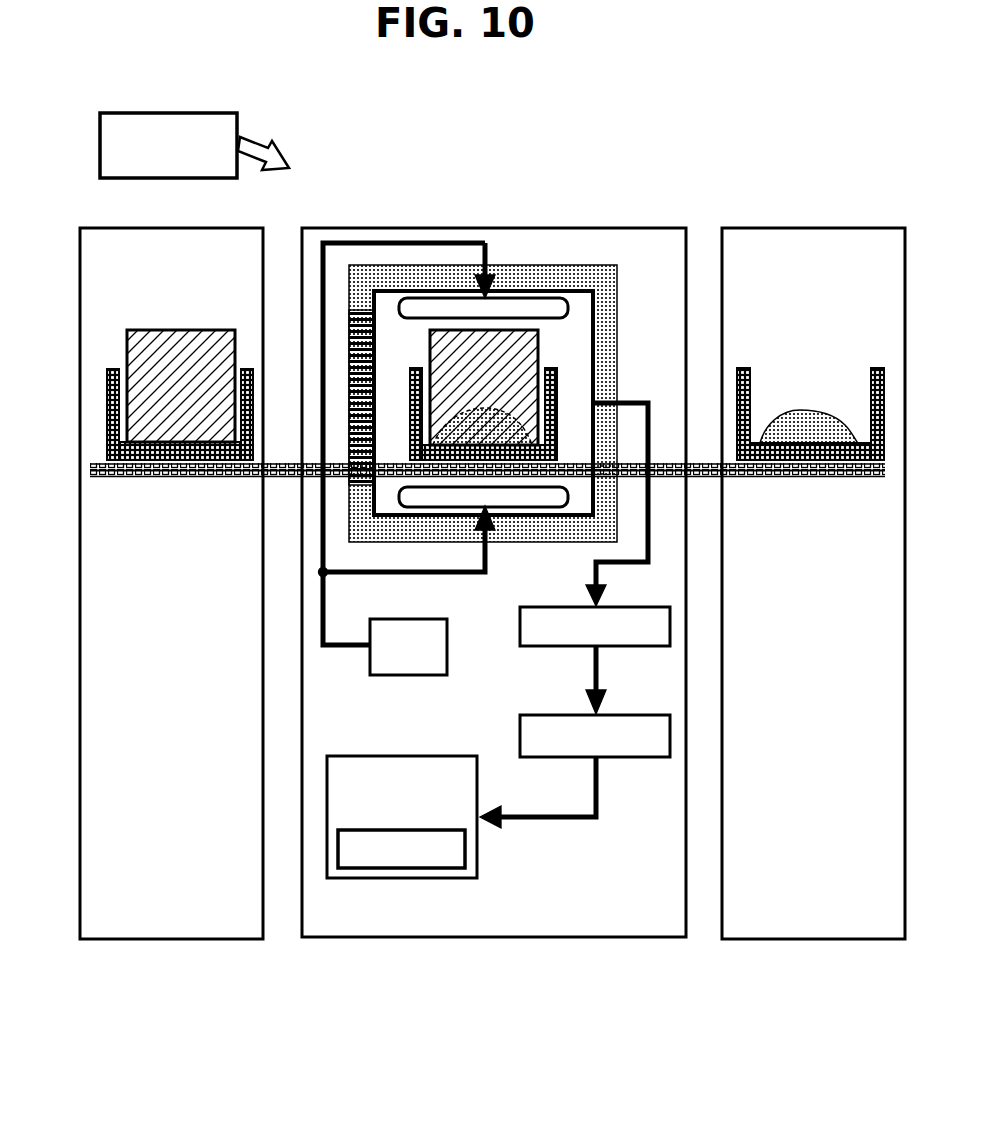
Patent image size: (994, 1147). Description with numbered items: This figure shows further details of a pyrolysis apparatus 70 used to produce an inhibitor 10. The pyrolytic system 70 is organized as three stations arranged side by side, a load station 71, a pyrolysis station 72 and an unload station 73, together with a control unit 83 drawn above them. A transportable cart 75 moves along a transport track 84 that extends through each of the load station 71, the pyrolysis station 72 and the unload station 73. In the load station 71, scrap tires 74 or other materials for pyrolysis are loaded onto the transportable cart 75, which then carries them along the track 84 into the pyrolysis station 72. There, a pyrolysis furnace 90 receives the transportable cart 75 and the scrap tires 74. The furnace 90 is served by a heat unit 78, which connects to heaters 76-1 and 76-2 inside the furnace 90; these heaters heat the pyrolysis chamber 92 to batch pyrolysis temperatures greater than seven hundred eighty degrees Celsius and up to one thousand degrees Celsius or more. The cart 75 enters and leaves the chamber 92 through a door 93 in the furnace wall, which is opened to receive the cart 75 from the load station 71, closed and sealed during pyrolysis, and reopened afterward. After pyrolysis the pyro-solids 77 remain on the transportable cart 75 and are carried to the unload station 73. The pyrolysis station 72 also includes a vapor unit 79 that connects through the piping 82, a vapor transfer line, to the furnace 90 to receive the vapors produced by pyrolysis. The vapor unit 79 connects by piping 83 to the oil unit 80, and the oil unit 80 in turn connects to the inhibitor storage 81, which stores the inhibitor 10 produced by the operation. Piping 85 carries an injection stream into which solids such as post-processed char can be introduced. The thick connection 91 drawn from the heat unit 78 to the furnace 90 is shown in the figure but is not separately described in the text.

The inhibitor 10 is at (463, 840).
The pyrolysis apparatus 70 is at (730, 140).
The load station 71 is at (195, 940).
The pyrolysis station 72 is at (506, 940).
The unload station 73 is at (742, 920).
The scrap tires 74 is at (194, 350).
The transportable cart 75 is at (203, 458).
The heater 76-1 is at (528, 305).
The heater 76-2 is at (500, 497).
The pyro-solids 77 is at (503, 420).
The heat unit 78 is at (432, 619).
The vapor unit 79 is at (618, 640).
The oil unit 80 is at (615, 750).
The inhibitor storage 81 is at (400, 758).
The piping 82 is at (618, 560).
The control unit 83 is at (118, 156).
The transport track 84 is at (232, 479).
The piping 85 is at (568, 818).
The pyrolysis furnace 90 is at (512, 275).
The heating conduit 91 is at (325, 589).
The pyrolysis chamber 92 is at (388, 372).
The door 93 is at (349, 358).